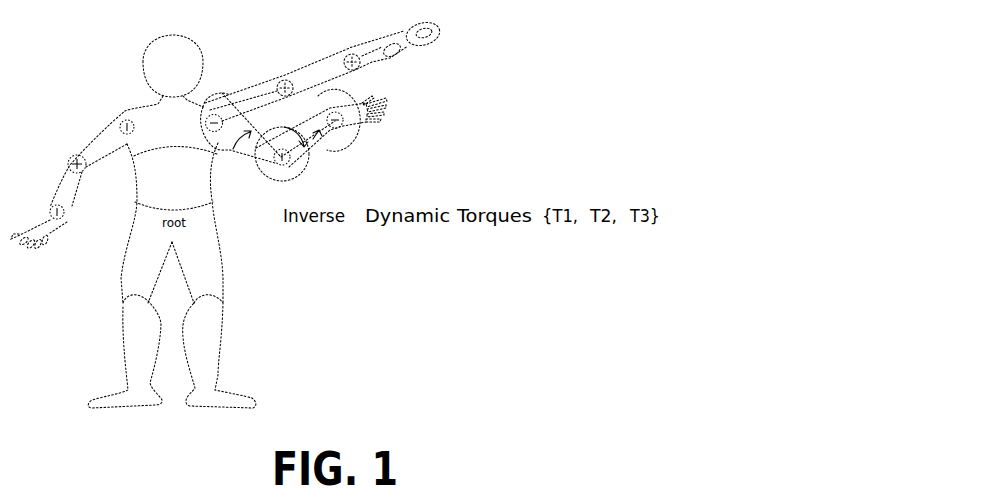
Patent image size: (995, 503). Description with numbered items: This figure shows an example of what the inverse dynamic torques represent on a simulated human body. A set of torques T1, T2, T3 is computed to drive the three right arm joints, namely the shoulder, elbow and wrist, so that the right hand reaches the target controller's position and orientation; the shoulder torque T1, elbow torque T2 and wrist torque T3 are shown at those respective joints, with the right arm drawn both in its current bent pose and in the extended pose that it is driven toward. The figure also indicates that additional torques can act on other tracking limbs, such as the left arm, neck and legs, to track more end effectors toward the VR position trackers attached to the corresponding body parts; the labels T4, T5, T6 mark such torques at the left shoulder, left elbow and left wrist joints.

The shoulder joint torque T1 is at (221, 142).
The elbow joint torque T2 is at (282, 165).
The wrist joint torque T3 is at (342, 127).
The left shoulder joint torque T4 is at (121, 115).
The left elbow joint torque T5 is at (64, 162).
The left wrist joint torque T6 is at (45, 211).